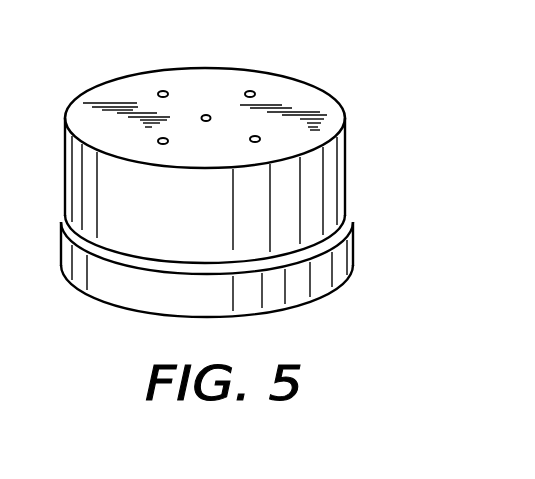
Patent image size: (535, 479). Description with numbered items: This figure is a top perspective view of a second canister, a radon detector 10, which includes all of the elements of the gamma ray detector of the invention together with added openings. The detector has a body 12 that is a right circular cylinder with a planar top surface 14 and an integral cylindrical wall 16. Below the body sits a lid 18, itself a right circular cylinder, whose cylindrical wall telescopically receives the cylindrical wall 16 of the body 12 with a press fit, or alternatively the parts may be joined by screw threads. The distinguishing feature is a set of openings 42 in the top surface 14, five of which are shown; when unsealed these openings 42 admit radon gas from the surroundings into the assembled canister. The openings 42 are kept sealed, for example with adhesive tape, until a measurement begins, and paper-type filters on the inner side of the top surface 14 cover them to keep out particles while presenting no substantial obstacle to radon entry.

The radon detector 10 is at (306, 50).
The body 12 is at (260, 146).
The top surface 14 is at (290, 92).
The cylindrical wall 16 is at (342, 153).
The lid 18 is at (362, 263).
The openings 42 is at (247, 91).